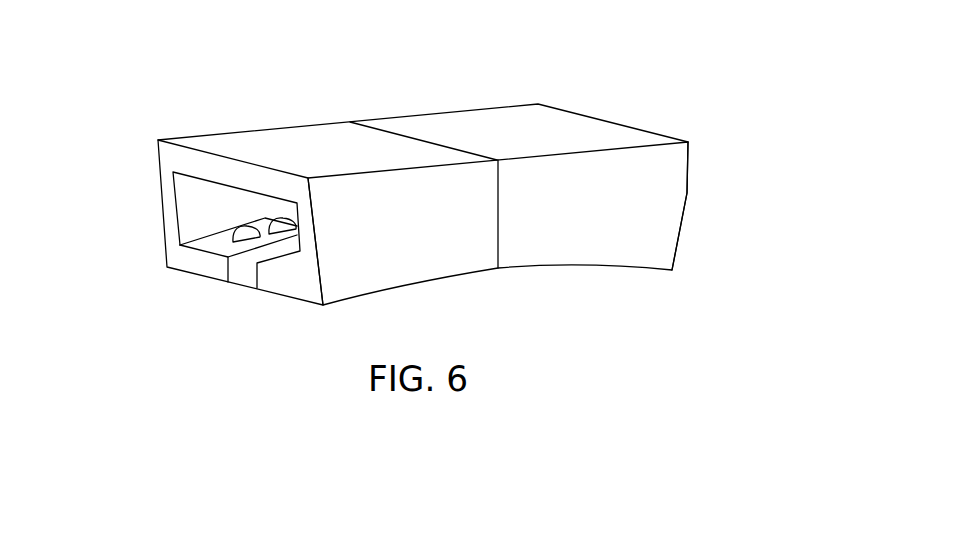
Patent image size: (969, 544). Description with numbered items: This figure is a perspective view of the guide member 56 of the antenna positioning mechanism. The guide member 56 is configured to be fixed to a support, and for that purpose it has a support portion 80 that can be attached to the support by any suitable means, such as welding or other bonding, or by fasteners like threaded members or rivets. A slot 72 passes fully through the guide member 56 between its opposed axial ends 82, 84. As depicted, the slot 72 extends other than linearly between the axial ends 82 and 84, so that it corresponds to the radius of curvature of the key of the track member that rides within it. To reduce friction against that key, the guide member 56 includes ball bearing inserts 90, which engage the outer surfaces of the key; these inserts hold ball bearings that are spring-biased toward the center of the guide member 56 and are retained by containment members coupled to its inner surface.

The guide member 56 is at (713, 147).
The support portion 80 is at (502, 135).
The axial end 82 is at (160, 188).
The axial end 84 is at (687, 193).
The slot 72 is at (212, 228).
The ball bearing inserts 90 is at (217, 245).